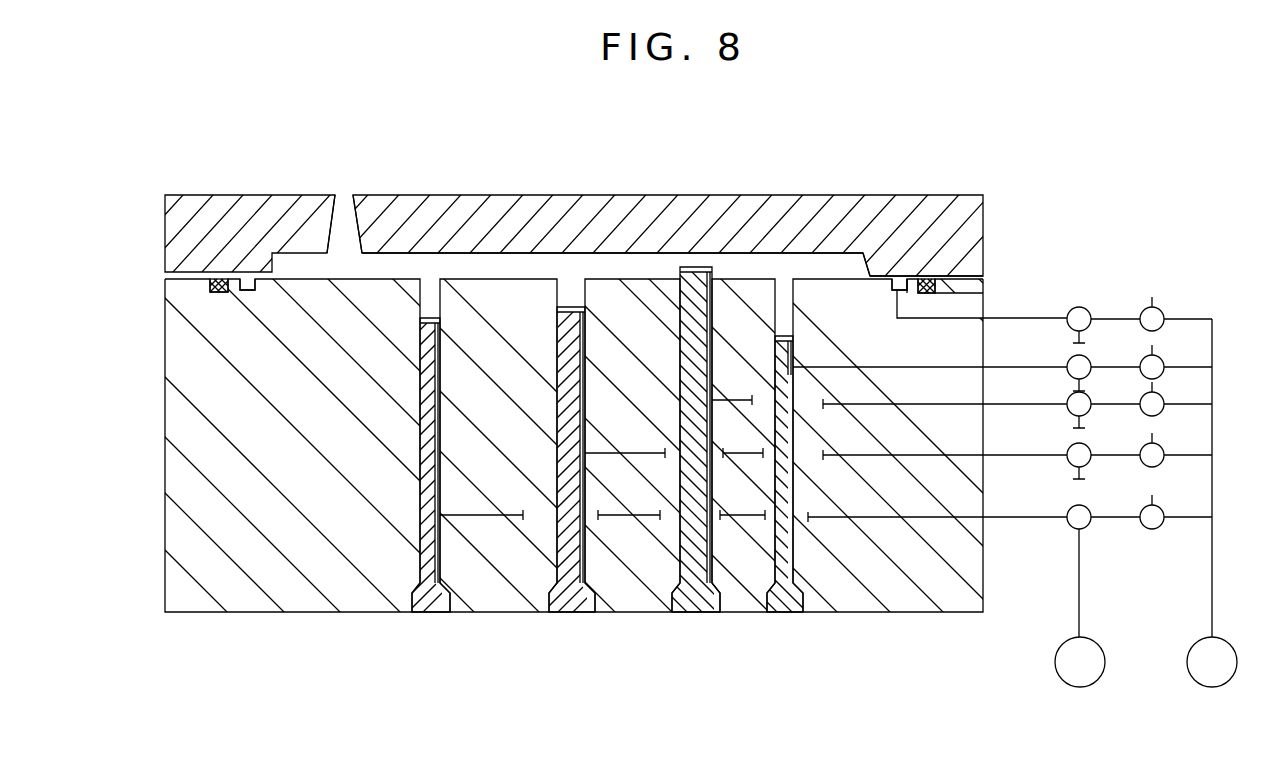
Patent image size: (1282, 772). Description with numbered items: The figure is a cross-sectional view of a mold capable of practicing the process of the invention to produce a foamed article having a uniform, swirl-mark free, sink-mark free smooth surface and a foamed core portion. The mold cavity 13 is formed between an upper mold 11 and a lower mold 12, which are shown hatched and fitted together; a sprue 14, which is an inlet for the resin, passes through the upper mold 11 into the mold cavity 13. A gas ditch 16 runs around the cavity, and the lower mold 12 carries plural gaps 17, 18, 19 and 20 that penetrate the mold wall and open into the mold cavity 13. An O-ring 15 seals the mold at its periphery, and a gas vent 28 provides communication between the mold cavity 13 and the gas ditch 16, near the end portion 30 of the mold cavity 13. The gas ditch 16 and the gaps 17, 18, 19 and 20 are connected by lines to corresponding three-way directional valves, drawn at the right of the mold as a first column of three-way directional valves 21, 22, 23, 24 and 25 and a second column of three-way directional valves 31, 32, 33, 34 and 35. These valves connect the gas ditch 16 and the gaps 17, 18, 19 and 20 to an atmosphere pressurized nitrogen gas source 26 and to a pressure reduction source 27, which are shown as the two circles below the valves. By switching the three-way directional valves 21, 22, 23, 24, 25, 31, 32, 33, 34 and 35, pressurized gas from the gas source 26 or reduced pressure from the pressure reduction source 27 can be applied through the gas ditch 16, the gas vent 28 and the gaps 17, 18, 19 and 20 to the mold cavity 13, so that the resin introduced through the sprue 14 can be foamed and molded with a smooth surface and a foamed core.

The upper mold 11 is at (727, 205).
The lower mold 12 is at (305, 610).
The mold cavity 13 is at (468, 262).
The sprue 14 is at (347, 212).
The O-ring 15 is at (937, 277).
The gas ditch 16 is at (246, 272).
The gap 17 is at (441, 437).
The gap 18 is at (586, 404).
The gap 19 is at (710, 345).
The gap 20 is at (795, 347).
The three-way directional valve 21 is at (1070, 311).
The three-way directional valve 22 is at (1070, 359).
The three-way directional valve 23 is at (1070, 396).
The three-way directional valve 24 is at (1070, 447).
The three-way directional valve 25 is at (1070, 509).
The pressurized N2 gas source 26 is at (1057, 672).
The pressure reduction source 27 is at (1238, 680).
The gas vent 28 is at (880, 280).
The end portion of mold cavity 30 is at (843, 268).
The three-way directional valve 31 is at (1163, 311).
The three-way directional valve 32 is at (1163, 359).
The three-way directional valve 33 is at (1163, 396).
The three-way directional valve 34 is at (1163, 447).
The three-way directional valve 35 is at (1163, 509).